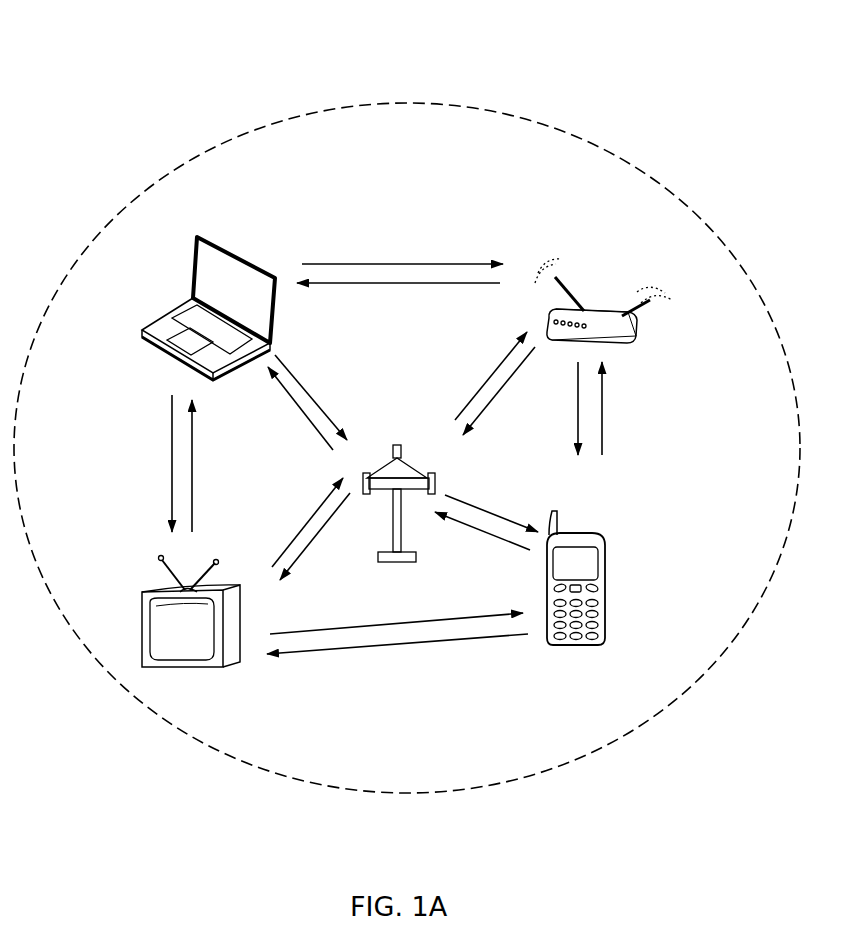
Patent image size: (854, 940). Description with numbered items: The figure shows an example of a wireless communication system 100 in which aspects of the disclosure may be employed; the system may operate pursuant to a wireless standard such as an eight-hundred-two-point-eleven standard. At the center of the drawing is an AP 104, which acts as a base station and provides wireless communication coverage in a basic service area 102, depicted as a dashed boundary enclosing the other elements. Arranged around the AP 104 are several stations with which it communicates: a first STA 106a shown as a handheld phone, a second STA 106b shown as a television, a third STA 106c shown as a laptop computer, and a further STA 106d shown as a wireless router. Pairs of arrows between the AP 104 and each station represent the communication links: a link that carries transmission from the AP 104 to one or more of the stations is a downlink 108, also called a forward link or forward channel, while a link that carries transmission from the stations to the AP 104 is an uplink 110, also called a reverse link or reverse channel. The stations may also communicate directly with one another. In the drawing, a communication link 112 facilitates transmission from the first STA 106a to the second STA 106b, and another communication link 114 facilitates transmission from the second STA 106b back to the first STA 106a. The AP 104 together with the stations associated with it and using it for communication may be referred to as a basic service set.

The wireless communication system 100 is at (660, 76).
The basic service area 102 is at (738, 262).
The AP 104 is at (397, 445).
The first STA 106a is at (582, 532).
The second STA 106b is at (236, 590).
The third STA 106c is at (206, 238).
The STA 106d is at (611, 312).
The downlink 108 is at (477, 500).
The uplink 110 is at (460, 543).
The communication link 112 is at (352, 622).
The communication link 114 is at (392, 660).